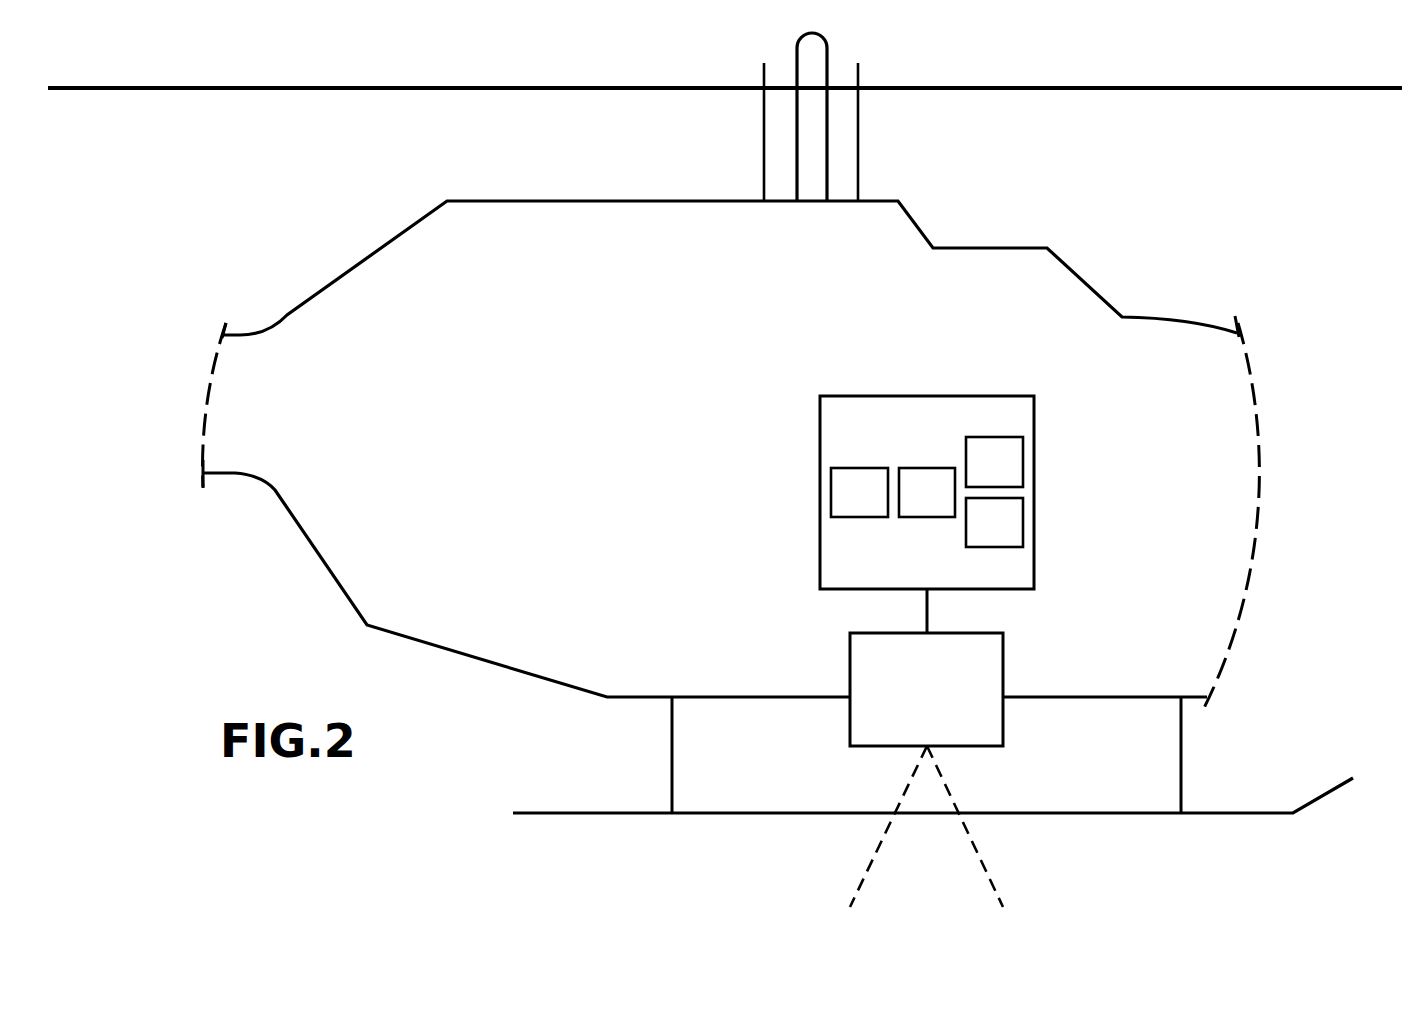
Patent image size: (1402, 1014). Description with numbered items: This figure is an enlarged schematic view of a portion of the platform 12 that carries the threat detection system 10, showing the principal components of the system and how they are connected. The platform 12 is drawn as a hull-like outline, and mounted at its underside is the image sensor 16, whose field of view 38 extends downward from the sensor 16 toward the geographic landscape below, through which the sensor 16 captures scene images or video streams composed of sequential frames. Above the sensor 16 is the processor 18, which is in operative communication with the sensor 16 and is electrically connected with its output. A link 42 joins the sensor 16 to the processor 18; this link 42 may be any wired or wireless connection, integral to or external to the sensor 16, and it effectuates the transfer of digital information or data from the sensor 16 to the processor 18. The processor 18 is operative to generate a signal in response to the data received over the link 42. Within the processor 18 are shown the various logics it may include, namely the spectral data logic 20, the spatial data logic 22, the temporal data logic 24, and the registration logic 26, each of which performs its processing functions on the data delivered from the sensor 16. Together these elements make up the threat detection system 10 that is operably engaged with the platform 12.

The threat detection system 10 is at (794, 462).
The platform 12 is at (358, 267).
The image sensor 16 is at (946, 702).
The processor 18 is at (986, 492).
The spectral data logic 20 is at (877, 505).
The spatial data logic 22 is at (944, 505).
The temporal data logic 24 is at (1012, 475).
The registration logic 26 is at (1035, 481).
The field of view 38 is at (878, 850).
The link 42 is at (930, 608).